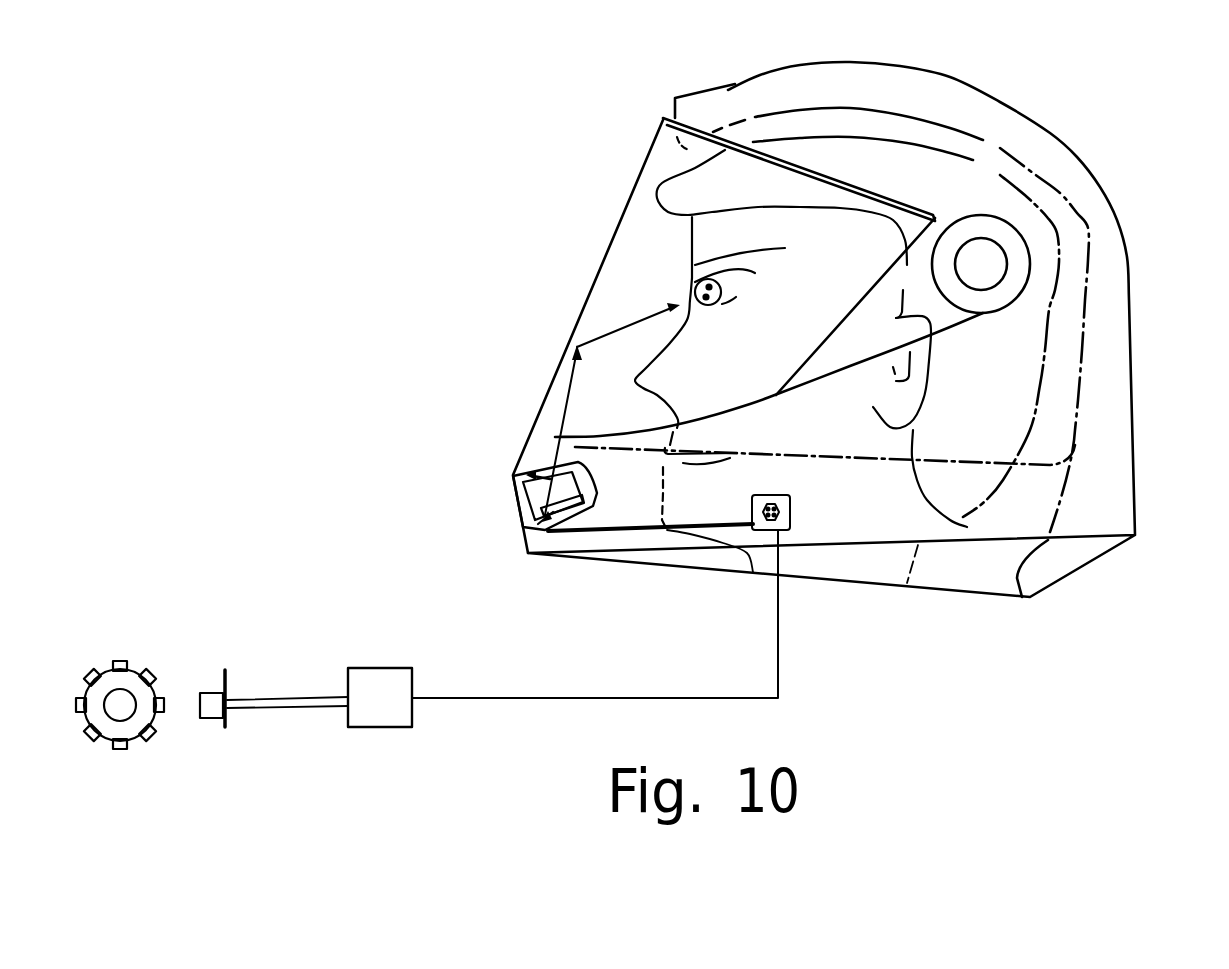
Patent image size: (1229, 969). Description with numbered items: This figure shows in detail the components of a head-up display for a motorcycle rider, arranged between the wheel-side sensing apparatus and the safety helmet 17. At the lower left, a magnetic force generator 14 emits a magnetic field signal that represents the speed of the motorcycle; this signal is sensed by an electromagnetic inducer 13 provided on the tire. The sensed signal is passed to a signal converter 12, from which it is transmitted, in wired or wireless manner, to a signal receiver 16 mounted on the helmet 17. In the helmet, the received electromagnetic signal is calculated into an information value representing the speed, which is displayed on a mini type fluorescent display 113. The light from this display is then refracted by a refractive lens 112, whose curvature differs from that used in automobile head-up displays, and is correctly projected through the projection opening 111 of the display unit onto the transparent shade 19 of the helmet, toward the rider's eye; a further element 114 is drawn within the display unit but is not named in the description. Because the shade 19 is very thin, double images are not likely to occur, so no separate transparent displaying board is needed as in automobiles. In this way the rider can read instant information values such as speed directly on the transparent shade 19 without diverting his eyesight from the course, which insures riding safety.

The signal converter 12 is at (363, 722).
The electromagnetic inducer 13 is at (207, 682).
The magnetic force generator 14 is at (137, 655).
The signal receiver 16 is at (792, 536).
The helmet 17 is at (1122, 463).
The shade 19 is at (613, 248).
The projection opening 111 is at (553, 455).
The refractive lens 112 is at (512, 473).
The mini type fluorescent display 113 is at (535, 524).
The display 114 is at (528, 503).